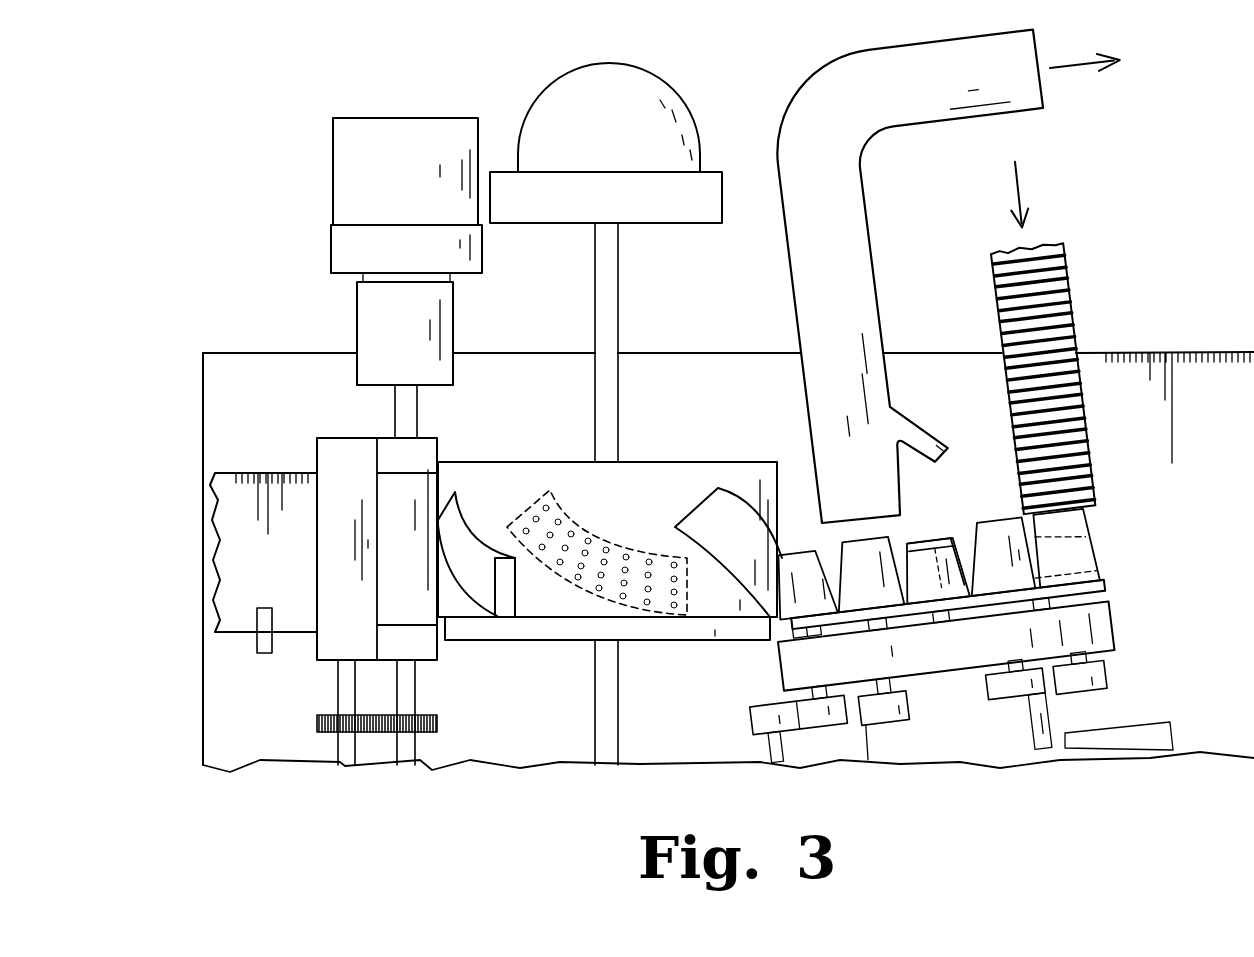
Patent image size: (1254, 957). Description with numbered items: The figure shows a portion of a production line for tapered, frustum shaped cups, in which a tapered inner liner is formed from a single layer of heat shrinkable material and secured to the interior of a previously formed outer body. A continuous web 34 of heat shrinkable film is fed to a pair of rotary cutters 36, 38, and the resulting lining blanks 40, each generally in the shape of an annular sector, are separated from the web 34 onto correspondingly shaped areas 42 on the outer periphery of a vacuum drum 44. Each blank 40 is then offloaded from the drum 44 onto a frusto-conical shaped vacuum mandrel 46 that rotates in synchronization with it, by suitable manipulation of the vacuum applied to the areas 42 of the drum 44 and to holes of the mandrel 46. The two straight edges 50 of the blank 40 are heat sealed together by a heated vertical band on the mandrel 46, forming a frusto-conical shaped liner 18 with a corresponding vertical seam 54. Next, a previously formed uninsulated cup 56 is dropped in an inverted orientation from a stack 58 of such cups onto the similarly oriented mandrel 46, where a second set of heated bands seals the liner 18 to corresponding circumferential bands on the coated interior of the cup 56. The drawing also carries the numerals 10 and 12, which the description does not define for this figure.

The container handling apparatus 10 is at (927, 645).
The container 12 is at (1063, 548).
The frusto-conical shaped liner 18 is at (936, 564).
The continuous web 34 is at (235, 540).
The rotary cutter 36 is at (437, 662).
The rotary cutter 38 is at (323, 663).
The lining blank 40 is at (507, 590).
The correspondingly shaped area 42 is at (522, 498).
The vacuum drum 44 is at (778, 472).
The frusto-conical shaped vacuum mandrel 46 is at (870, 576).
The straight edge 50 is at (683, 510).
The vertical seam 54 is at (959, 614).
The uninsulated cup 56 is at (999, 556).
The stack 58 is at (992, 289).